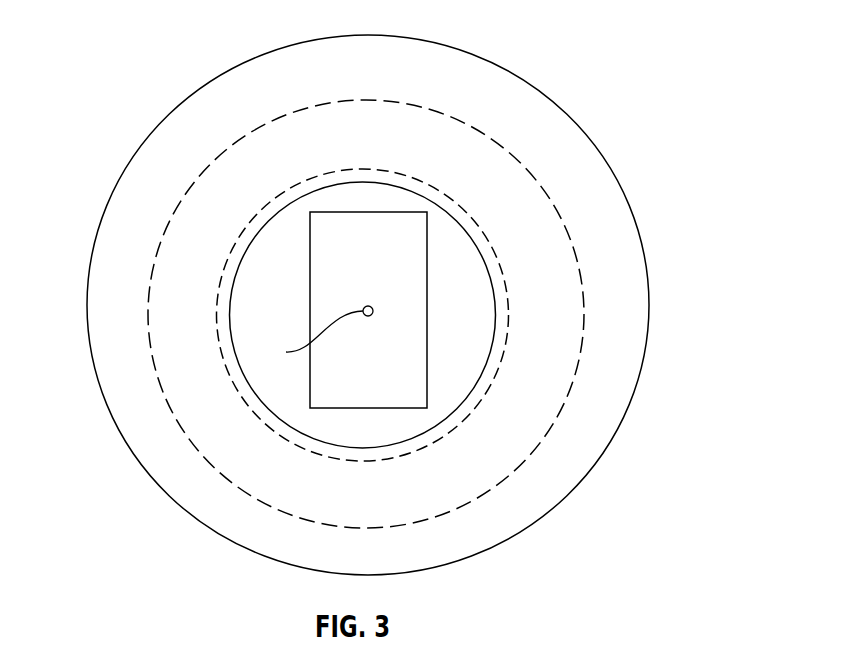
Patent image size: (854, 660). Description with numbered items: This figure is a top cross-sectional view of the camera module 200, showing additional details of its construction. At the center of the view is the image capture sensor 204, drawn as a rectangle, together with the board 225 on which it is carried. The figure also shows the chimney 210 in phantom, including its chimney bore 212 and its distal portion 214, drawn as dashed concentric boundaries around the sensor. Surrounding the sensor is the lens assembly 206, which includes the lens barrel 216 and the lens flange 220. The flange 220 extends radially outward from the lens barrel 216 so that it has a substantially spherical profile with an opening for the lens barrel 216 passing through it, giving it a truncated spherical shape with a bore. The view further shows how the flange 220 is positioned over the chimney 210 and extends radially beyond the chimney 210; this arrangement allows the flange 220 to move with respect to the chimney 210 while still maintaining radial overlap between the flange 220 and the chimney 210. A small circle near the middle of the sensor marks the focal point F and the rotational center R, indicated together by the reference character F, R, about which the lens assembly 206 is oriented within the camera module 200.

The camera module 200 is at (115, 85).
The image capture sensor 204 is at (416, 307).
The lens assembly 206 is at (594, 91).
The chimney 210 is at (593, 310).
The chimney bore 212 is at (458, 418).
The distal portion 214 is at (540, 365).
The lens barrel 216 is at (229, 312).
The lens flange 220 is at (630, 201).
The board 225 is at (467, 248).